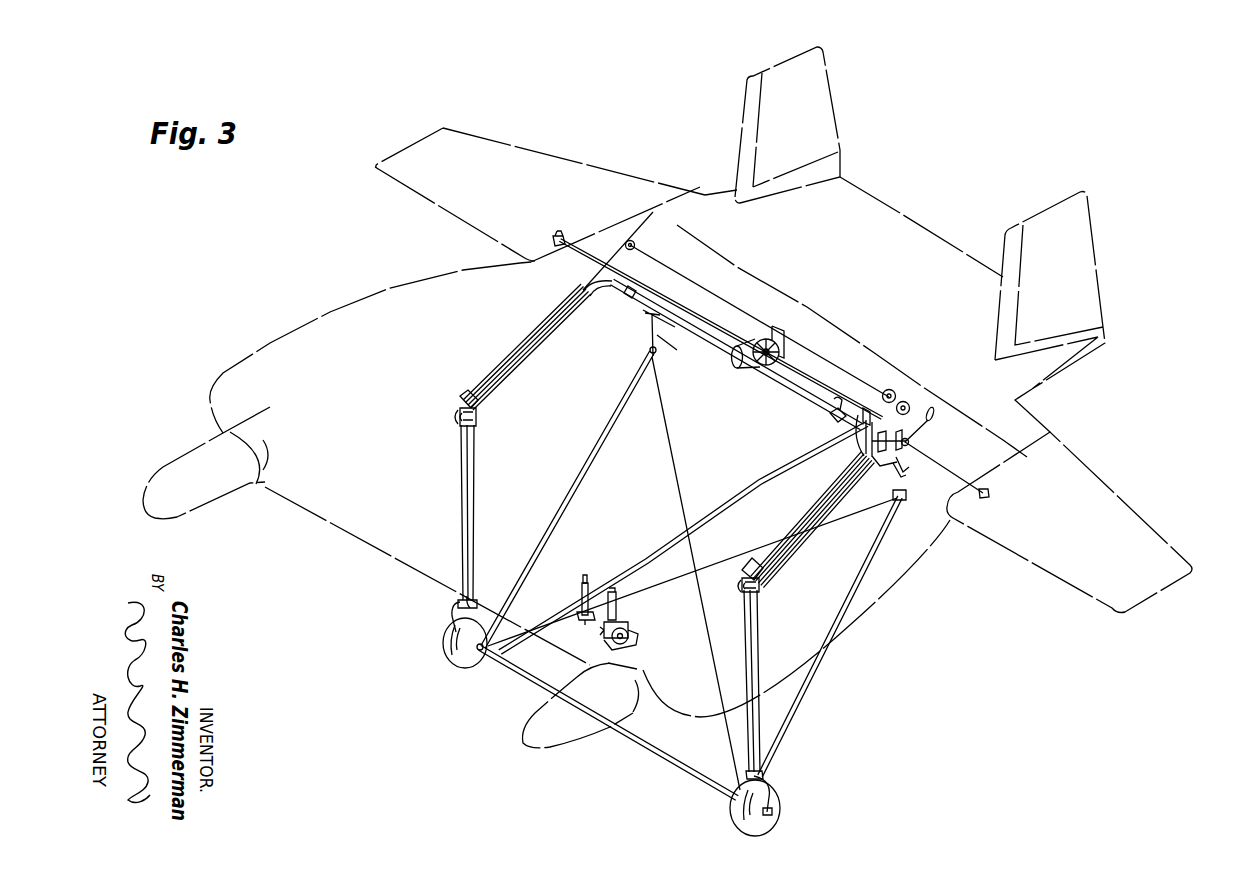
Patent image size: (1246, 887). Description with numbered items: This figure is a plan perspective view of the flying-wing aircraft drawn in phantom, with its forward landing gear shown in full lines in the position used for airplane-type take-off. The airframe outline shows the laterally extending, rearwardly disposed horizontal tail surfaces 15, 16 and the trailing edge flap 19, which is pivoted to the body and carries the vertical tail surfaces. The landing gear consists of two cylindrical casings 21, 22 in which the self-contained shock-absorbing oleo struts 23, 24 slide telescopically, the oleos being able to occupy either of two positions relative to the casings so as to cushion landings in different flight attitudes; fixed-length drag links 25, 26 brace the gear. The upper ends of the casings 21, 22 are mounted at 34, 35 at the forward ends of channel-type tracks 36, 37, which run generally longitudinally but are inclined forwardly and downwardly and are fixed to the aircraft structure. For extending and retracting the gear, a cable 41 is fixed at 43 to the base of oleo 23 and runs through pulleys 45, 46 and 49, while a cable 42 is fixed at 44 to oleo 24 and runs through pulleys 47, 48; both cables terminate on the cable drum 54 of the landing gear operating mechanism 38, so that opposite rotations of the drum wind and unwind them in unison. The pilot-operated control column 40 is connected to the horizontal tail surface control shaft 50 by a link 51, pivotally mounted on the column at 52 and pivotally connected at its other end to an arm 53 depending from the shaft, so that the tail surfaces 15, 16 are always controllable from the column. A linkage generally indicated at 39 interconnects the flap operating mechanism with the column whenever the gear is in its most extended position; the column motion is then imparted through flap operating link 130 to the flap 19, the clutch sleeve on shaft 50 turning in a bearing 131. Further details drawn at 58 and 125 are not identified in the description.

The horizontal tail surface 15 is at (1110, 487).
The horizontal tail surface 16 is at (528, 150).
The trailing edge flap 19 is at (903, 205).
The cylindrical casing 21 is at (463, 516).
The cylindrical casing 22 is at (754, 684).
The oleo strut 23 is at (478, 596).
The oleo strut 24 is at (760, 760).
The drag link 25 is at (577, 490).
The drag link 26 is at (813, 681).
The casing mounting 34 is at (478, 422).
The casing mounting 35 is at (762, 592).
The channel-type track 36 is at (528, 366).
The channel-type track 37 is at (785, 548).
The landing gear operating mechanism 38 is at (612, 613).
The linkage 39 is at (912, 476).
The control column 40 is at (586, 577).
The cable 41 is at (460, 496).
The cable 42 is at (745, 632).
The cable attachment 43 is at (456, 601).
The cable attachment 44 is at (758, 772).
The pulley 45 is at (456, 424).
The pulley 46 is at (646, 218).
The pulley 47 is at (740, 590).
The pulley 48 is at (907, 402).
The pulley 49 is at (889, 390).
The horizontal tail surface control shaft 50 is at (806, 380).
The link 51 is at (727, 506).
The pivot 52 is at (580, 598).
The arm 53 is at (842, 425).
The cable drum 54 is at (606, 645).
The jack post 58 is at (618, 594).
The bracket 125 is at (868, 412).
The flap operating link 130 is at (920, 438).
The bearing 131 is at (933, 411).